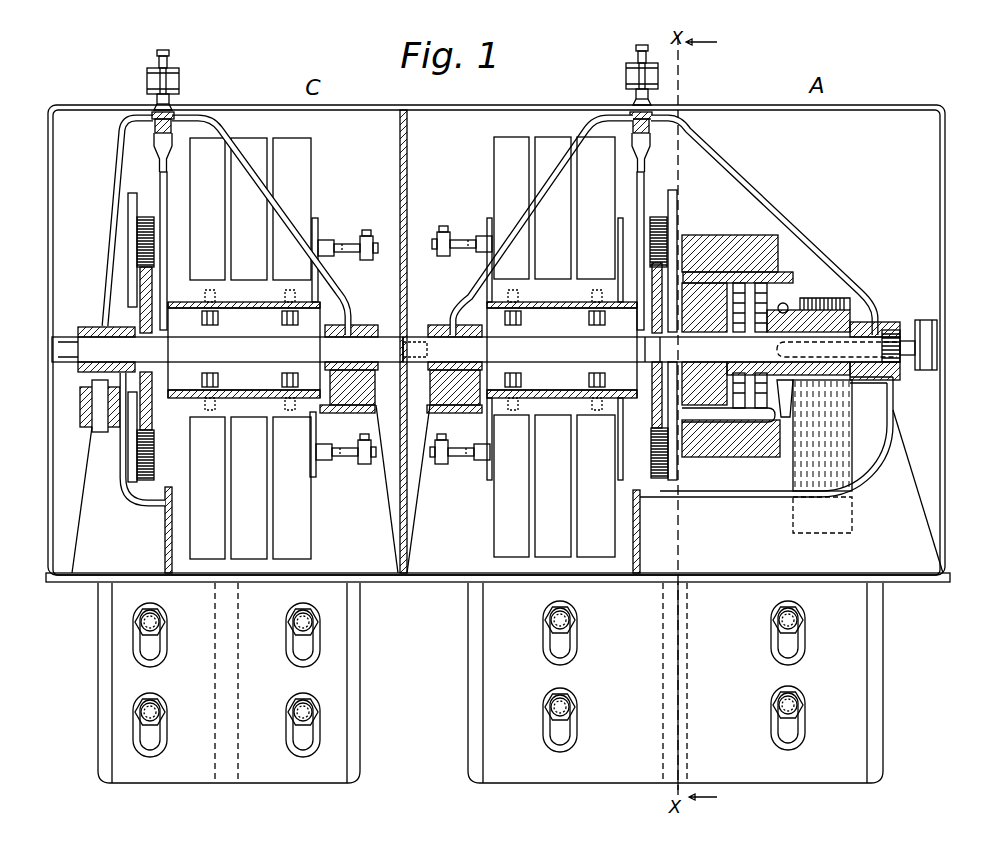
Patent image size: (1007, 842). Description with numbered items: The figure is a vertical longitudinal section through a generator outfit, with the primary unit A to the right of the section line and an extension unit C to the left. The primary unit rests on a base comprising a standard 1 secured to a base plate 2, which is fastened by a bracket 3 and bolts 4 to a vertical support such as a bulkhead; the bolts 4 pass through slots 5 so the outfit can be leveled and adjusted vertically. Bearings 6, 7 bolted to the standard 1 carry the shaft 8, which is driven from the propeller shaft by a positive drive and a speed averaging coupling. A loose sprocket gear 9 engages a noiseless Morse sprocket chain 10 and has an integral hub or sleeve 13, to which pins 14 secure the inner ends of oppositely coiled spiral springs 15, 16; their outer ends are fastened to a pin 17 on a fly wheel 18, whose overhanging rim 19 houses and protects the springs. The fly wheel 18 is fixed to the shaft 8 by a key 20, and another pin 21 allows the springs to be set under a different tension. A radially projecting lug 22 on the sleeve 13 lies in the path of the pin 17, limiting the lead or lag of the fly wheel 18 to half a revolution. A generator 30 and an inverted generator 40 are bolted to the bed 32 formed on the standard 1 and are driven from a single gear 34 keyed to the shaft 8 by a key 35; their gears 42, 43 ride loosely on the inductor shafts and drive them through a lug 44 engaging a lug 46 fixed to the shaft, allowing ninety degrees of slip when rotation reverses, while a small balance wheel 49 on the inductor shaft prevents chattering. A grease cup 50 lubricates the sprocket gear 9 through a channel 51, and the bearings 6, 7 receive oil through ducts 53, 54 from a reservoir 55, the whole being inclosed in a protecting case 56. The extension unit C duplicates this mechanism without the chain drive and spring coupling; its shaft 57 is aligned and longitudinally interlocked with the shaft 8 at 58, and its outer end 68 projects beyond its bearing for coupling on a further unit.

The standard 1 is at (842, 491).
The base plate 2 is at (784, 581).
The bracket 3 is at (490, 683).
The bolts 4 is at (143, 702).
The slots 5 is at (152, 733).
The bearing 6 is at (891, 329).
The bearing 7 is at (436, 330).
The shaft 8 is at (651, 348).
The sprocket gear 9 is at (858, 322).
The sprocket chain 10 is at (830, 453).
The hub or sleeve 13 is at (815, 315).
The pins 14 is at (808, 296).
The spiral spring 15 is at (787, 303).
The spiral spring 16 is at (748, 300).
The pin 17 is at (740, 282).
The fly wheel 18 is at (724, 246).
The overhanging rim 19 is at (755, 283).
The key 20 is at (706, 422).
The pin 21 is at (757, 422).
The lug 22 is at (786, 407).
The generator 30 is at (500, 160).
The bed 32 is at (562, 350).
The gear 34 is at (650, 306).
The key 35 is at (640, 350).
The generator 40 is at (505, 500).
The gear 42 is at (658, 478).
The gear 43 is at (658, 215).
The lug 44 is at (146, 218).
The lug 46 is at (163, 232).
The balance wheel 49 is at (674, 207).
The grease cup 50 is at (938, 330).
The channel 51 is at (893, 378).
The duct 53 is at (878, 318).
The duct 54 is at (447, 306).
The reservoir 55 is at (630, 75).
The protecting case 56 is at (946, 145).
The shaft 57 is at (227, 349).
The interlock 58 is at (415, 345).
The outer end of shaft 68 is at (62, 347).